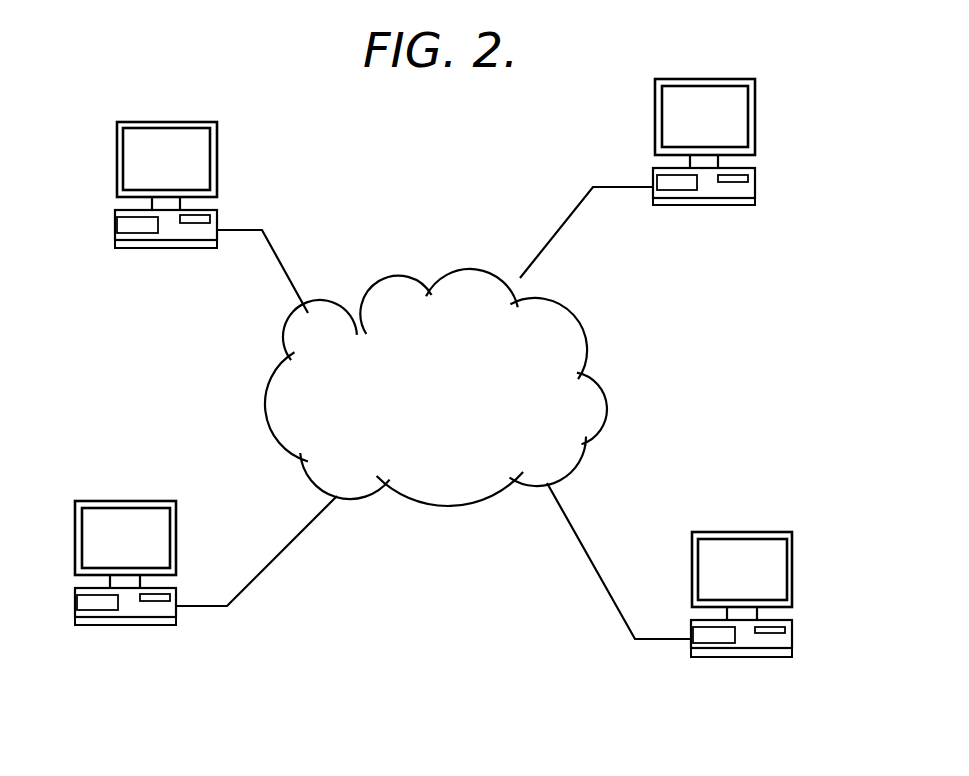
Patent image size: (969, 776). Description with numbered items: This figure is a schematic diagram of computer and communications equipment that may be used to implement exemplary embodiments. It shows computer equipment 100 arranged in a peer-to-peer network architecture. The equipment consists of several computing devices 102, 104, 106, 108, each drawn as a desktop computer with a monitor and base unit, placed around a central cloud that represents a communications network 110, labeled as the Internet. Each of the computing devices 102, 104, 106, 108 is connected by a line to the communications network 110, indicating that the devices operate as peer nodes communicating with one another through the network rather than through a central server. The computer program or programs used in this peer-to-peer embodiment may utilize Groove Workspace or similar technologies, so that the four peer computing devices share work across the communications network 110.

The computer equipment 100 is at (447, 232).
The computing device 102 is at (158, 122).
The computing device 104 is at (753, 122).
The computing device 106 is at (790, 557).
The computing device 108 is at (107, 503).
The communications network 110 is at (584, 357).